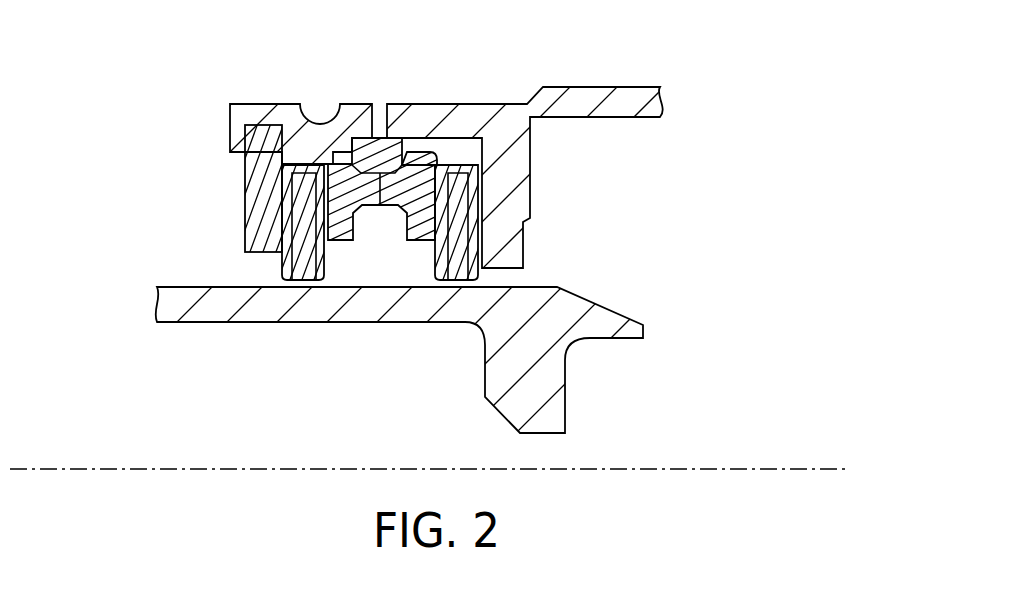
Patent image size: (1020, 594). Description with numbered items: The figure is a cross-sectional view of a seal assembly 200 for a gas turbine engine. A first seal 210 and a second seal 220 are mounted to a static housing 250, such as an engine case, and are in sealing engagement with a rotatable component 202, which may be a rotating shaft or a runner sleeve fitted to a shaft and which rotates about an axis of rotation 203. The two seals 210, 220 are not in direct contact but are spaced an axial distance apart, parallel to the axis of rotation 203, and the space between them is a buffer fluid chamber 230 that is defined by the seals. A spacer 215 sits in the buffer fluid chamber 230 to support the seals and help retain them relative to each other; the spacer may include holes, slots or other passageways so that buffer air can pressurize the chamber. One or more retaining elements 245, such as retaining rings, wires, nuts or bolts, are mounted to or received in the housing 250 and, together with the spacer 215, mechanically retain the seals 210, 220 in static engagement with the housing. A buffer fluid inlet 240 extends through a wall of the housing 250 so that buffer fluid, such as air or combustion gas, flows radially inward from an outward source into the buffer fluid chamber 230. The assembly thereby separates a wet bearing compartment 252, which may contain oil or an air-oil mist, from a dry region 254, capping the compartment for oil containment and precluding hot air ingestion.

The seal assembly 200 is at (169, 57).
The rotatable component 202 is at (347, 310).
The axis of rotation 203 is at (648, 468).
The first seal 210 is at (303, 268).
The spacer 215 is at (420, 157).
The second seal 220 is at (478, 279).
The buffer fluid chamber 230 is at (399, 166).
The buffer fluid inlet 240 is at (383, 106).
The retaining element 245 is at (252, 167).
The housing 250 is at (505, 126).
The bearing compartment 252 is at (637, 220).
The region 254 is at (169, 220).